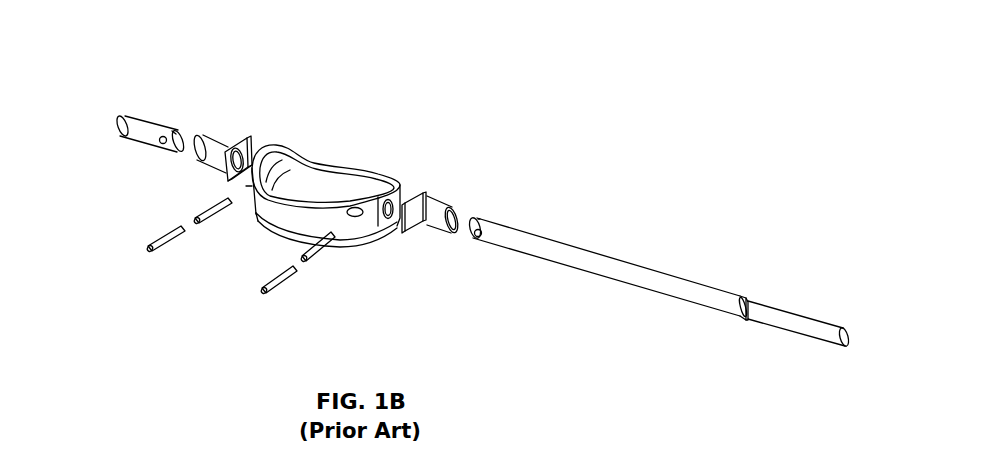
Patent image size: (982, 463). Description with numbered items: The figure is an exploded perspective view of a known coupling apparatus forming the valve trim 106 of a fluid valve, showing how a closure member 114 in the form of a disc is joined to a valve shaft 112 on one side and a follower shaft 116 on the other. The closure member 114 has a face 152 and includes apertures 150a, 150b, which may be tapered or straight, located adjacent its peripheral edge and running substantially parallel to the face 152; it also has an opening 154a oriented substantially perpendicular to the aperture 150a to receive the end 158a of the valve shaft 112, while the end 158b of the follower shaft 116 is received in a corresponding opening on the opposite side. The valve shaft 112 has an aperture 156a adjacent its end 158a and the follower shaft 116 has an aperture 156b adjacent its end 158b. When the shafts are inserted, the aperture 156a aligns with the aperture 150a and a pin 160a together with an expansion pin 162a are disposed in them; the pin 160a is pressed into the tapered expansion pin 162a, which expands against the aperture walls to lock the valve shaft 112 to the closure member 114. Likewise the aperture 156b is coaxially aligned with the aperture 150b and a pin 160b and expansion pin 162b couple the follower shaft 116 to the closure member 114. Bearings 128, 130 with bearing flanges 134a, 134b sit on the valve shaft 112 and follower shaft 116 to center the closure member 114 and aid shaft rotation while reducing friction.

The valve trim 106 is at (645, 110).
The valve shaft 112 is at (634, 258).
The closure member 114 is at (335, 164).
The follower shaft 116 is at (125, 118).
The bearing 128 is at (445, 205).
The bearing 130 is at (220, 138).
The bearing flange 134a is at (428, 192).
The bearing flange 134b is at (241, 140).
The aperture 150a is at (358, 208).
The aperture 150b is at (246, 188).
The face 152 is at (352, 242).
The opening 154a is at (390, 214).
The aperture 156a is at (480, 238).
The aperture 156b is at (160, 143).
The end 158a is at (480, 219).
The end 158b is at (168, 129).
The pin 160a is at (282, 288).
The pin 160b is at (167, 242).
The expansion pin 162a is at (318, 252).
The expansion pin 162b is at (216, 216).